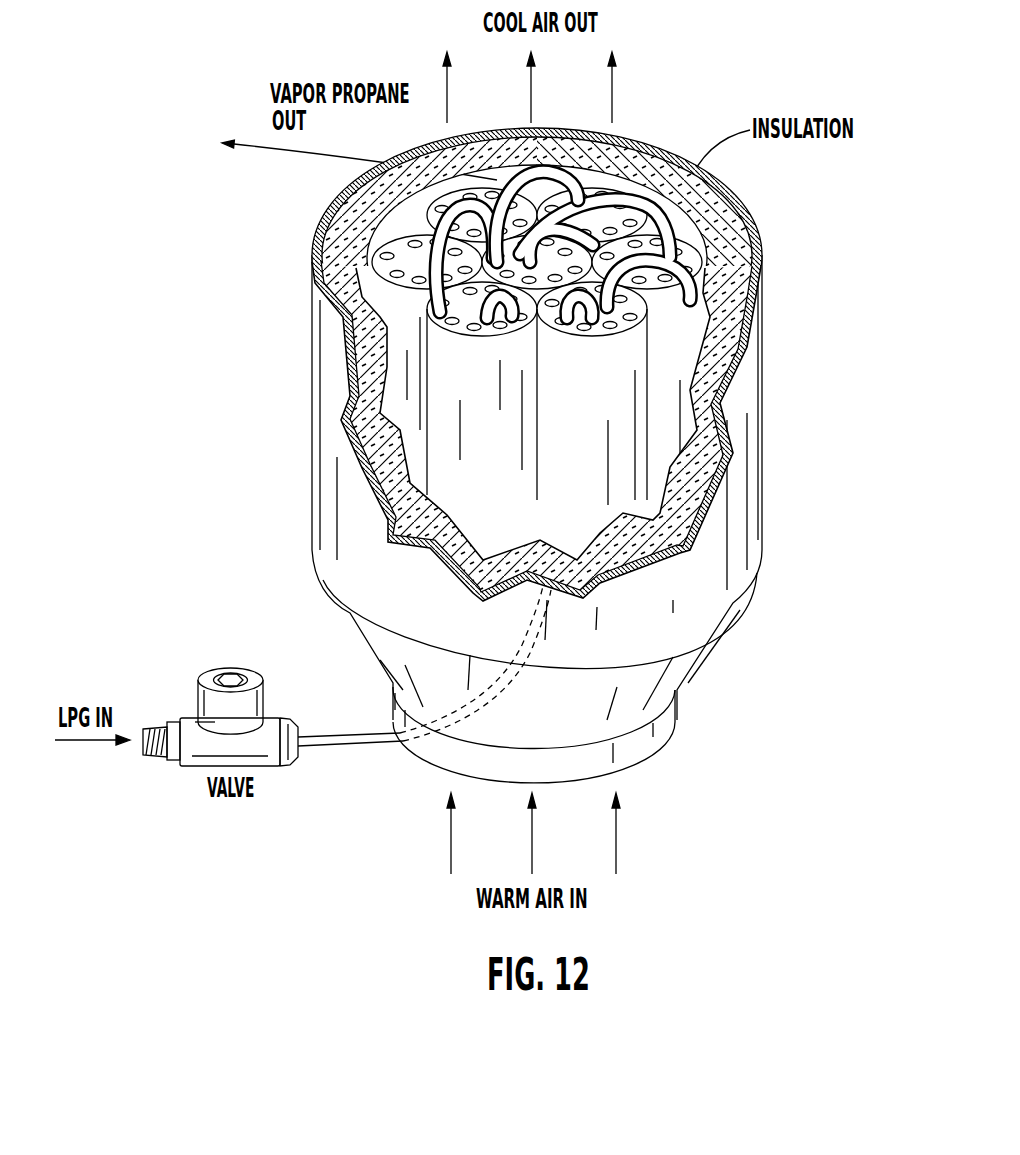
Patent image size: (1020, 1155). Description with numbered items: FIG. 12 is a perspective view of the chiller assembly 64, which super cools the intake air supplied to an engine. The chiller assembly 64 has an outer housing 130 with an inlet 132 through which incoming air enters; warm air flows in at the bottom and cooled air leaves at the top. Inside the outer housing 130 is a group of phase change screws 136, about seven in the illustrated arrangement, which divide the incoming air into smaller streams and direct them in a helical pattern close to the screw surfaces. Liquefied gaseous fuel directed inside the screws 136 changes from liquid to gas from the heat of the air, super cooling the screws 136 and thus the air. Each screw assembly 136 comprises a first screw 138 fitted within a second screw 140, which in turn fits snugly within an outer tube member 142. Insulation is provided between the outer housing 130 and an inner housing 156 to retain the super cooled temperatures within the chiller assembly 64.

The chiller assembly 64 is at (560, 435).
The outer housing 130 is at (740, 543).
The inlet 132 is at (630, 766).
The phase change screws 136 is at (690, 300).
The first screw 138 is at (388, 261).
The second screw 140 is at (472, 155).
The outer tube member 142 is at (493, 192).
The inner housing 156 is at (345, 415).